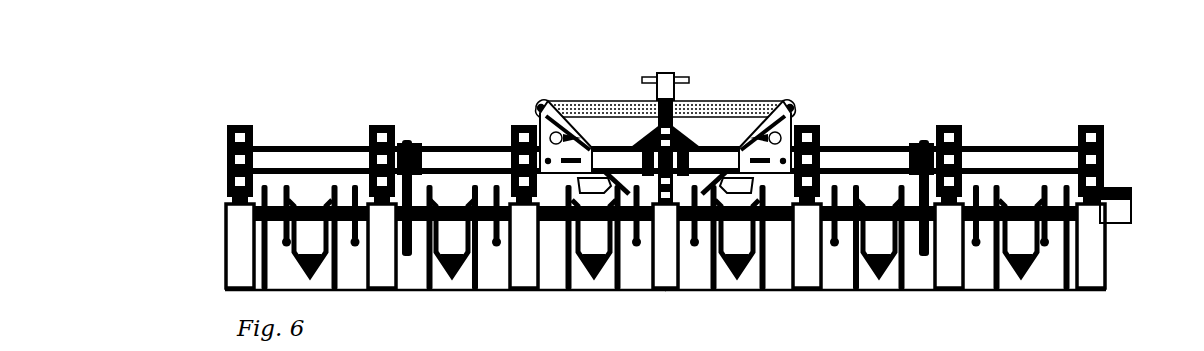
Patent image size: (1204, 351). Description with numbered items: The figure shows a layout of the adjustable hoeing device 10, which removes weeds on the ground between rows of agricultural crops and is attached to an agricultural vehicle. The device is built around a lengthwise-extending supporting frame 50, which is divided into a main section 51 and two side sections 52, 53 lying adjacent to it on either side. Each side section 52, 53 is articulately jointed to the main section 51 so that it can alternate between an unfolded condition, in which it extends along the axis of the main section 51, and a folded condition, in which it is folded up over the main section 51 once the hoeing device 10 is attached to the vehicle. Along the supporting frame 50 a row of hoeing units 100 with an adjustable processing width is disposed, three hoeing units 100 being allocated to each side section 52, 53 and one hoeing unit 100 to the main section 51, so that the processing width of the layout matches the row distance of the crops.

The hoeing device 10 is at (1143, 84).
The supporting frame 50 is at (272, 158).
The main section 51 is at (528, 68).
The side section 52 is at (218, 100).
The side section 53 is at (1097, 97).
The hoeing unit 100 is at (333, 295).